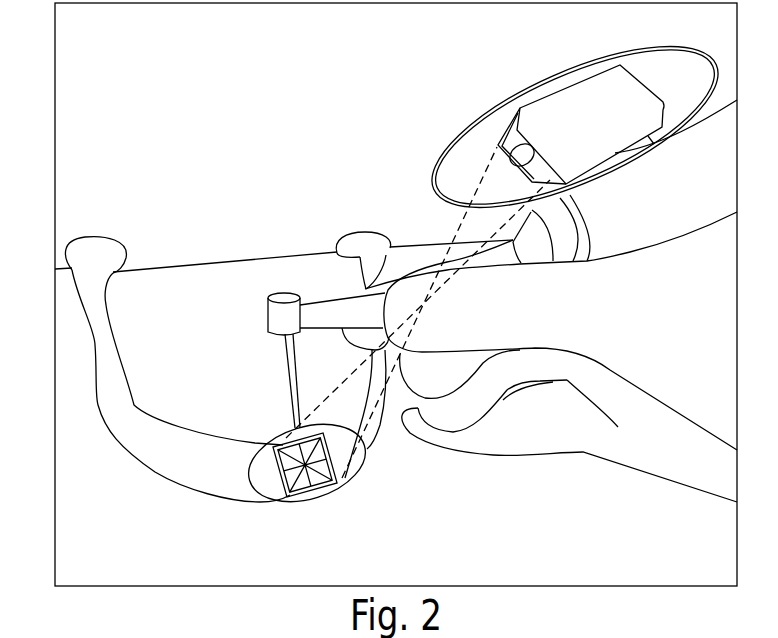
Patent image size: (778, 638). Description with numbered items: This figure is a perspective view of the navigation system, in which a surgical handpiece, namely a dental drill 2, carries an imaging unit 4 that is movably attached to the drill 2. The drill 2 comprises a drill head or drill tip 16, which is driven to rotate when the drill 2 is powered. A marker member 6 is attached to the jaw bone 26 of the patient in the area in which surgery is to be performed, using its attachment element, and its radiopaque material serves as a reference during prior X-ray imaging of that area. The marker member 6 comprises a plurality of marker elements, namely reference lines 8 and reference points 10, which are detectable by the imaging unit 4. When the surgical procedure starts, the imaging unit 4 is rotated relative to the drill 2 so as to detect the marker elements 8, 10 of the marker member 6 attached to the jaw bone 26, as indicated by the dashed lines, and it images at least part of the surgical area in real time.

The dental drill 2 is at (725, 169).
The imaging unit 4 is at (587, 80).
The marker member 6 is at (287, 500).
The reference lines 8 is at (327, 490).
The reference points 10 is at (317, 458).
The drill tip 16 is at (288, 405).
The jaw bone 26 is at (137, 458).